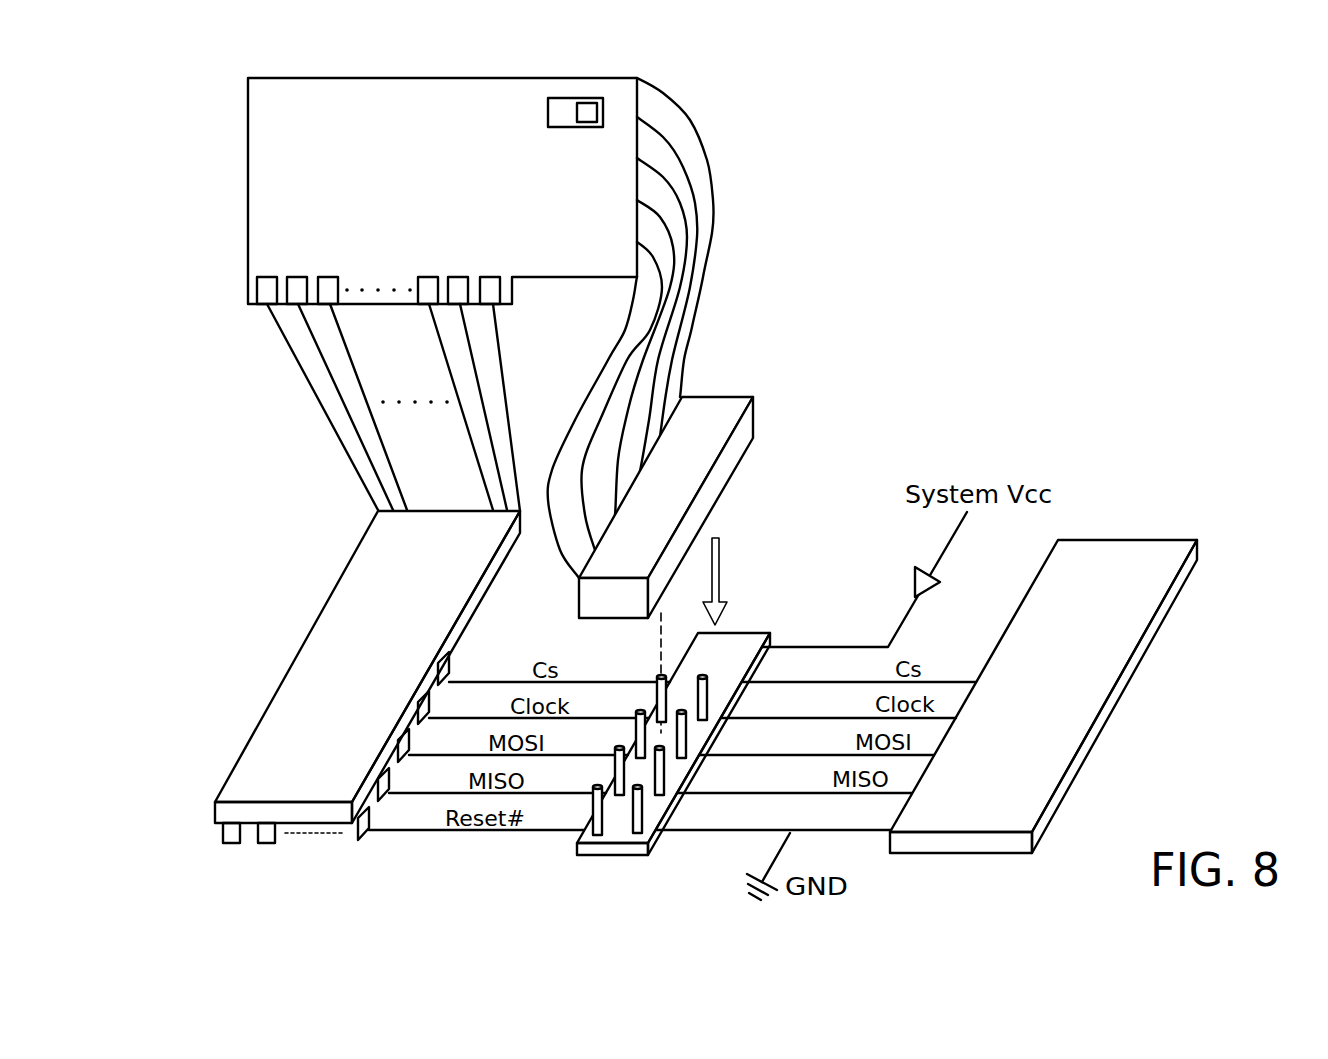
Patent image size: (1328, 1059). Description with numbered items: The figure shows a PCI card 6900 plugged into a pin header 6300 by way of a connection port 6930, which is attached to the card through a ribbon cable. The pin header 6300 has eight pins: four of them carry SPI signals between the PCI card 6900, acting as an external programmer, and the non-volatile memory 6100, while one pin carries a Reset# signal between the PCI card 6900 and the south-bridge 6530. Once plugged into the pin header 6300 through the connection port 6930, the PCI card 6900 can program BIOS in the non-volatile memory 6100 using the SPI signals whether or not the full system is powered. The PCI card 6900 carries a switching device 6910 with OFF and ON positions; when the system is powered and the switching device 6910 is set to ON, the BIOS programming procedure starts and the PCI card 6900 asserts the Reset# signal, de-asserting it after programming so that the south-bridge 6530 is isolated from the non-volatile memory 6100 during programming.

The PCI card 6900 is at (247, 162).
The switching device 6910 is at (567, 98).
The connection port 6930 is at (720, 397).
The south-bridge 6530 is at (257, 727).
The pin header 6300 is at (733, 633).
The non-volatile memory 6100 is at (1130, 538).